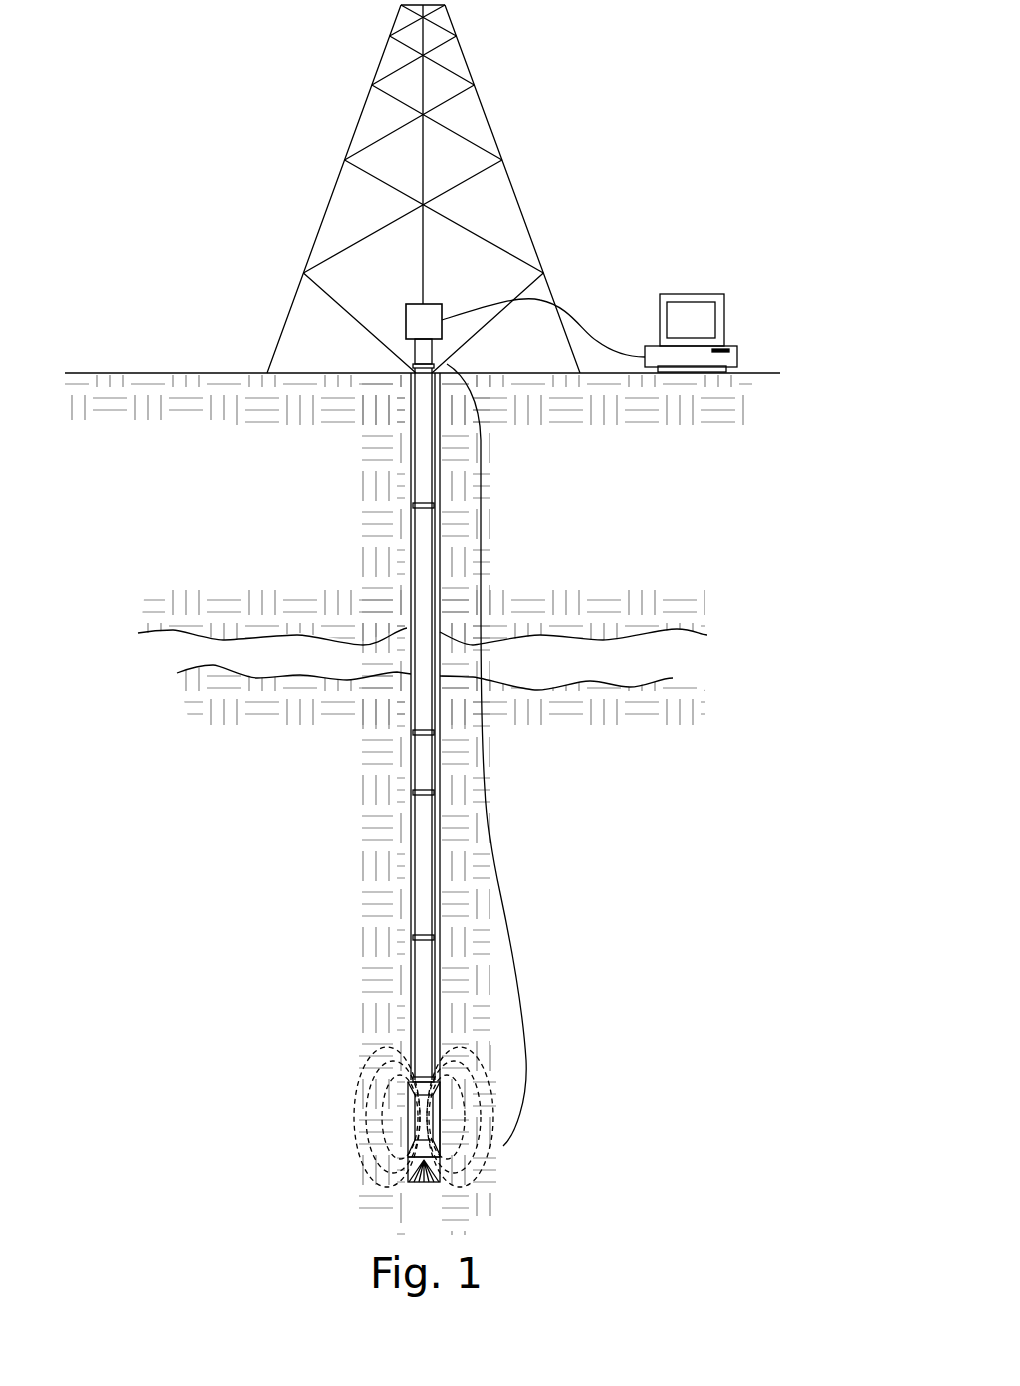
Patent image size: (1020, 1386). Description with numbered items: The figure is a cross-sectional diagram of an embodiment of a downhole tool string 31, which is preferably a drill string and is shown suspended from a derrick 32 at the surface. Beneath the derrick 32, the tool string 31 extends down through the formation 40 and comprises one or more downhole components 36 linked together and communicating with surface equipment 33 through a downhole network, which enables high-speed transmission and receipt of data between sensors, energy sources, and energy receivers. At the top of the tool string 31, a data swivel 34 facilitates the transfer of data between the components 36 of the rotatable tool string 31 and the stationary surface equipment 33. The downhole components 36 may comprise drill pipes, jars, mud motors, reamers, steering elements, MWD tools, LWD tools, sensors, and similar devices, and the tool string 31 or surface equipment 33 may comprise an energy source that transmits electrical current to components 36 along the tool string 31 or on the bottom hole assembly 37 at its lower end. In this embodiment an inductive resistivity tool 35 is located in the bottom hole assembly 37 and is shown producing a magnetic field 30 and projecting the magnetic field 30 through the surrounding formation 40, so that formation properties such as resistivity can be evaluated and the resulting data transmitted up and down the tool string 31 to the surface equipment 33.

The magnetic field 30 is at (508, 1146).
The downhole tool string 31 is at (486, 789).
The derrick 32 is at (513, 190).
The surface equipment 33 is at (693, 317).
The data swivel 34 is at (423, 320).
The resistivity tool 35 is at (412, 1082).
The downhole components 36 is at (428, 768).
The bottom hole assembly 37 is at (412, 1160).
The formation 40 is at (336, 1011).